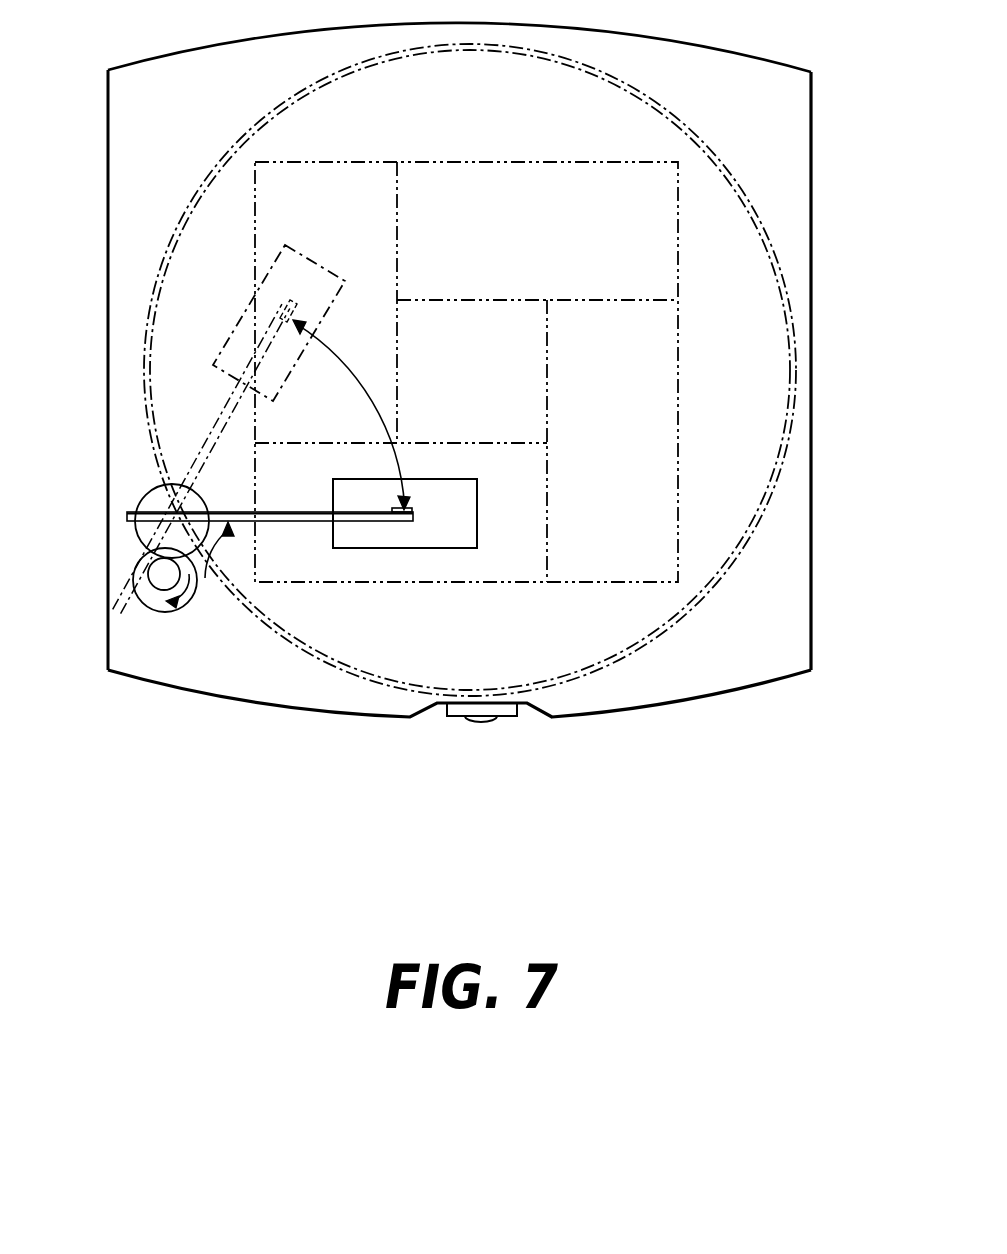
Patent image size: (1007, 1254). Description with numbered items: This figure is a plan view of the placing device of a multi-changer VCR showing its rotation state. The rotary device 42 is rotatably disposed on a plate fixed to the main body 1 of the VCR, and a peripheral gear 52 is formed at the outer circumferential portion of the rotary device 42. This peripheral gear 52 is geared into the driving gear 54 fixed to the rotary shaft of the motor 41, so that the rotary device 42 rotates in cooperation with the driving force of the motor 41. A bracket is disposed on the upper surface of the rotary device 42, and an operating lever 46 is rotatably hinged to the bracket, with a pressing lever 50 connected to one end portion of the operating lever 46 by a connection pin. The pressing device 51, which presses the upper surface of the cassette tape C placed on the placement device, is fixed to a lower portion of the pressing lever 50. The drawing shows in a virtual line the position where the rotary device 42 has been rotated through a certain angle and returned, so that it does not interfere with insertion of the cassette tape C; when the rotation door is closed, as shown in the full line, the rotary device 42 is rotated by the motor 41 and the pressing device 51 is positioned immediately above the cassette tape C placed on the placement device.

The multi-VCR main body 1 is at (811, 155).
The cassette tape C is at (510, 556).
The motor 41 is at (137, 575).
The rotary device 42 is at (150, 495).
The operating lever 46 is at (245, 600).
The pressing lever 50 is at (415, 510).
The pressing device 51 is at (398, 535).
The peripheral gear 52 is at (135, 528).
The driving gear 54 is at (150, 583).